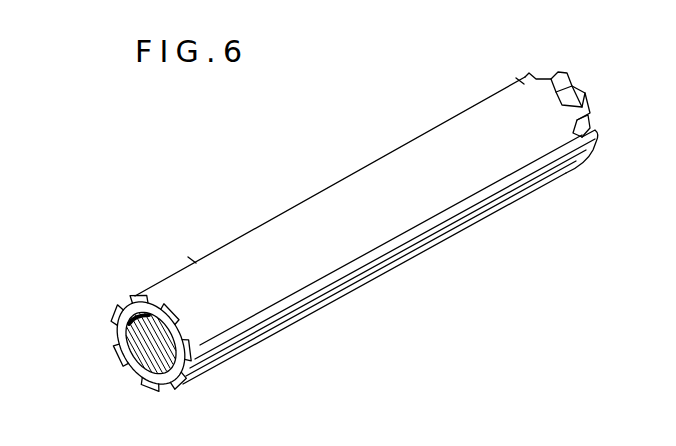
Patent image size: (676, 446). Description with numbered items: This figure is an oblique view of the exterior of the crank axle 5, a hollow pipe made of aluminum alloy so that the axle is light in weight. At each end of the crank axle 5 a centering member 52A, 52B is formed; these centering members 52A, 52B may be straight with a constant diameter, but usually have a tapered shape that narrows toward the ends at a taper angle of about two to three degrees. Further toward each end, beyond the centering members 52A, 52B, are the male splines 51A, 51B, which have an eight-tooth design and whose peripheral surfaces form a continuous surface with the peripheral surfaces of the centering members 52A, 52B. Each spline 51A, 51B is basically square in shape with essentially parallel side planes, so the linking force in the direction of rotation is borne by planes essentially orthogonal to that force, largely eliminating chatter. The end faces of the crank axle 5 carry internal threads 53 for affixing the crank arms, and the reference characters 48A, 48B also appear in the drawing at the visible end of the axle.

The crank axle 5 is at (320, 193).
The male spline 51A is at (125, 295).
The male spline 51B is at (560, 72).
The centering member 52A is at (197, 272).
The centering member 52B is at (535, 98).
The inner rib 48A is at (123, 314).
The inner rib 48B is at (192, 346).
The internal threads 53 is at (140, 376).